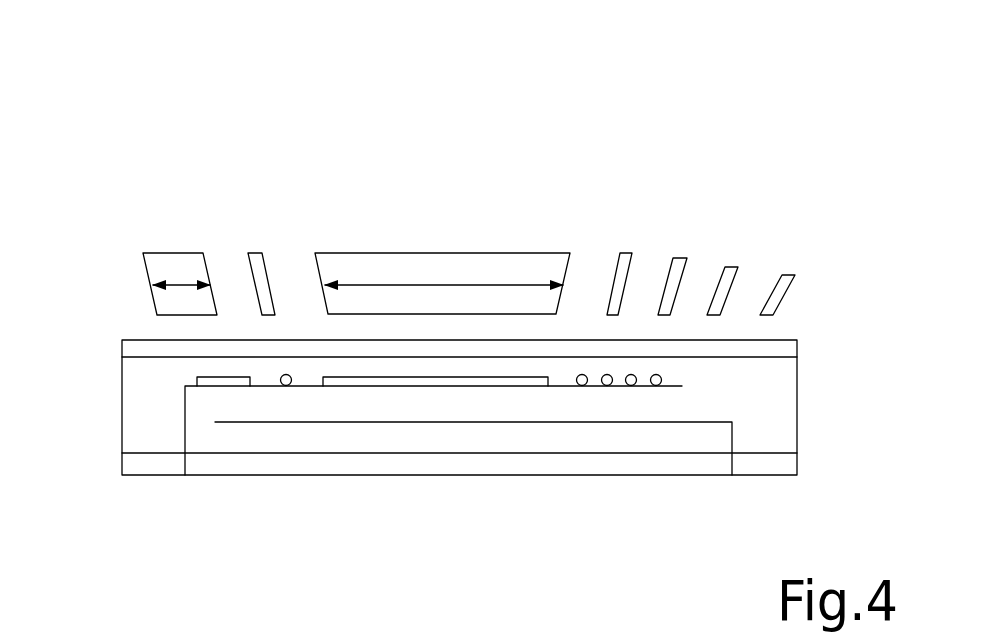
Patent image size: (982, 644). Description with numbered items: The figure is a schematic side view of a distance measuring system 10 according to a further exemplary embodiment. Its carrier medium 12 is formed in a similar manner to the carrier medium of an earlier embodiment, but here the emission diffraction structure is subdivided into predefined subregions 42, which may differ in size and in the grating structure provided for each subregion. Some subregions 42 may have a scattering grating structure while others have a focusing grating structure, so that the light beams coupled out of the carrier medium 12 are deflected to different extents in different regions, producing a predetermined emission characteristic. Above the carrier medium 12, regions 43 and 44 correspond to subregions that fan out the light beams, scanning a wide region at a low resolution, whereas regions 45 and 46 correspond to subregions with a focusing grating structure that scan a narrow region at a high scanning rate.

The distance measuring system 10 is at (110, 104).
The carrier medium 12 is at (113, 340).
The predefined subregions 42 is at (620, 389).
The region 43 is at (173, 252).
The region 44 is at (495, 252).
The region 45 is at (255, 252).
The region 46 is at (627, 243).